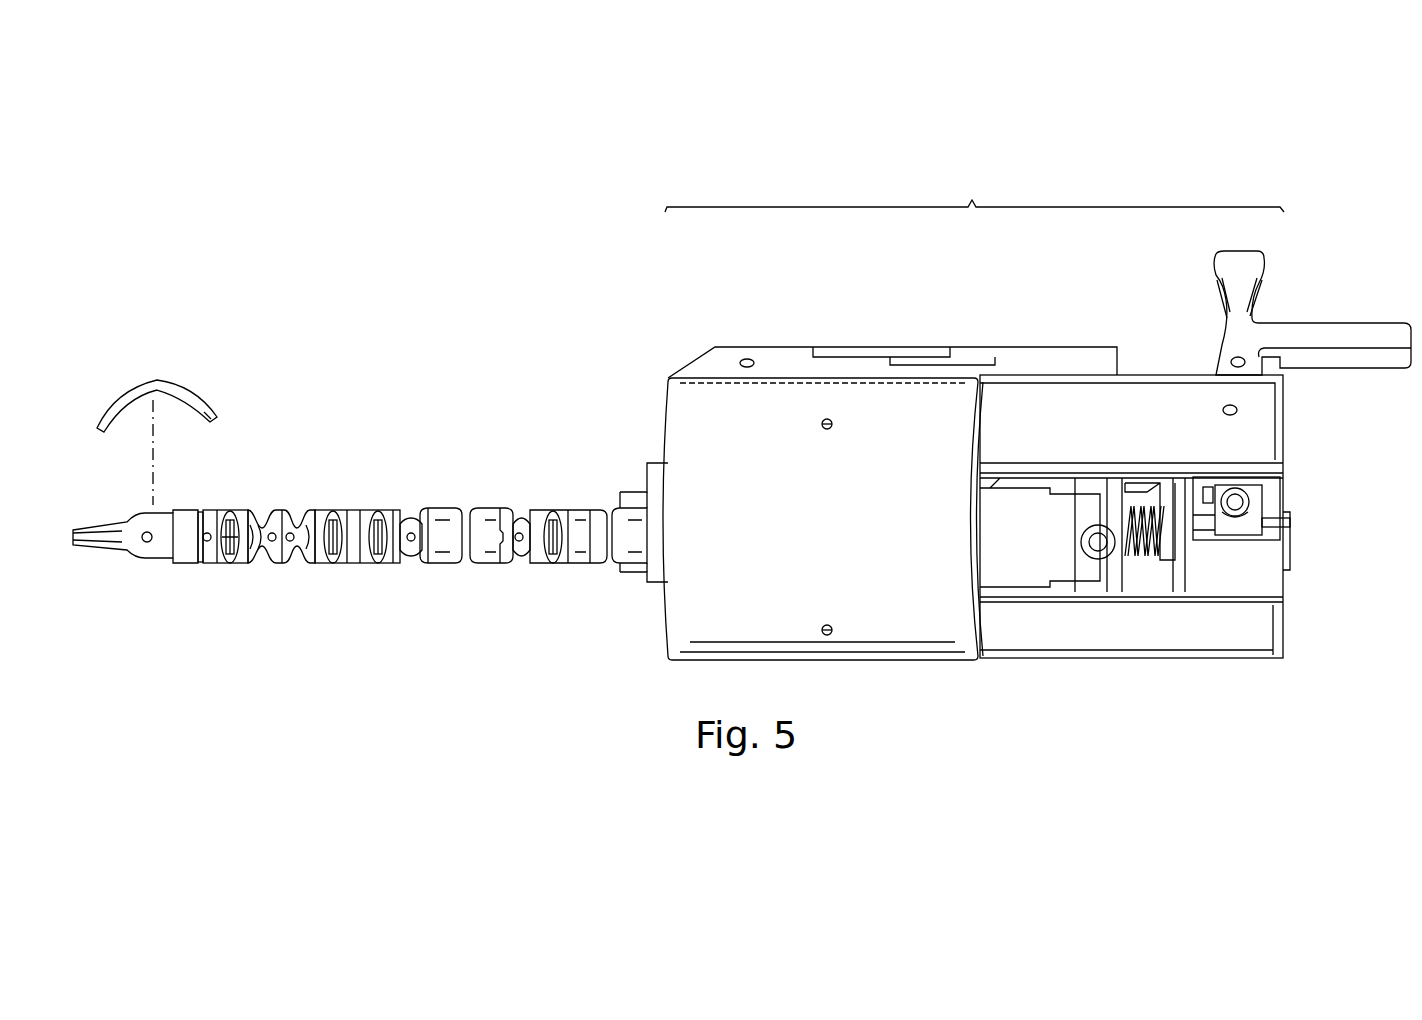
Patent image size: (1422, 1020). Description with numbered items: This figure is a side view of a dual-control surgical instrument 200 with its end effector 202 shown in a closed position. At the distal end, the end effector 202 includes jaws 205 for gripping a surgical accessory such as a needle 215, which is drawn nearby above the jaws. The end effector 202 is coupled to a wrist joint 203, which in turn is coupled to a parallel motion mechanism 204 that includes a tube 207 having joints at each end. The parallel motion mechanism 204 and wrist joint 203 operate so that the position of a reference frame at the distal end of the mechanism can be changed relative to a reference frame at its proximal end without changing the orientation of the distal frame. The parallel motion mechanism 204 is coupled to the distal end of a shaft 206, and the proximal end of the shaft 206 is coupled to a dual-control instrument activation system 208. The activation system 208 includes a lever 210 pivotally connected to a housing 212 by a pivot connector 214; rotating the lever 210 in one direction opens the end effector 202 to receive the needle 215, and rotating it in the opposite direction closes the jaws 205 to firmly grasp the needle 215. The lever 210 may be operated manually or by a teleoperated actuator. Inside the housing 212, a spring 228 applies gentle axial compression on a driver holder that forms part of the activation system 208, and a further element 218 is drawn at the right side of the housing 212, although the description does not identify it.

The dual-control surgical instrument 200 is at (450, 166).
The end effector 202 is at (183, 566).
The wrist joint 203 is at (275, 510).
The parallel motion mechanism 204 is at (465, 527).
The jaws 205 is at (101, 522).
The shaft 206 is at (548, 510).
The tube 207 is at (442, 566).
The dual-control instrument activation system 208 is at (1014, 413).
The lever 210 is at (1266, 262).
The housing 212 is at (708, 362).
The pivot connector 214 is at (1222, 410).
The needle 215 is at (134, 386).
The pin 218 is at (1292, 524).
The spring 228 is at (1144, 558).